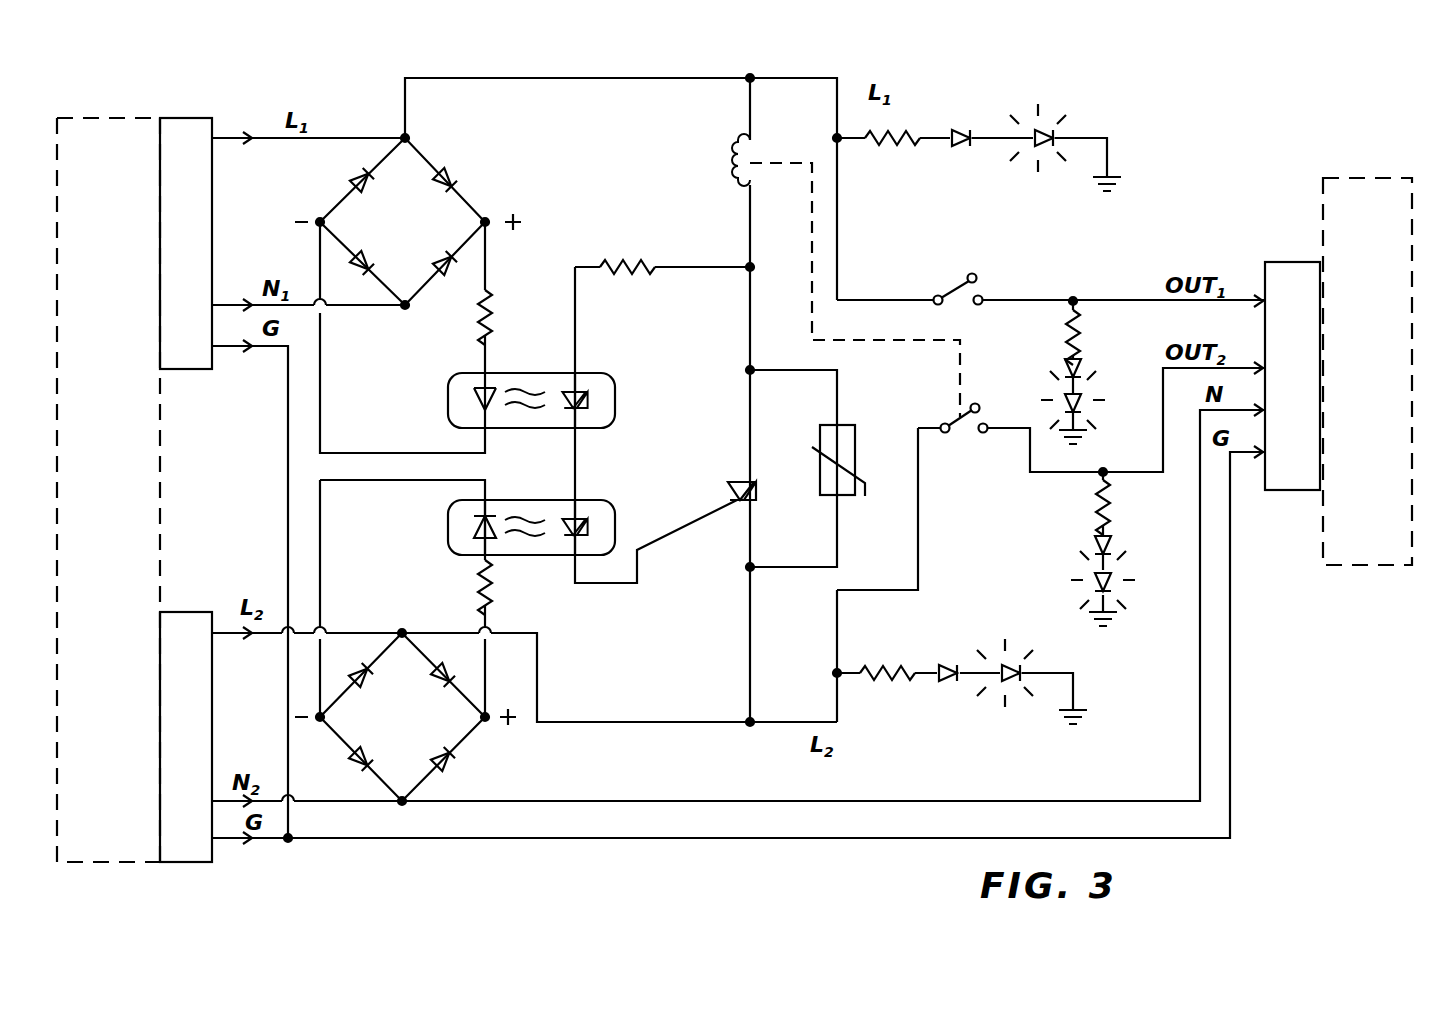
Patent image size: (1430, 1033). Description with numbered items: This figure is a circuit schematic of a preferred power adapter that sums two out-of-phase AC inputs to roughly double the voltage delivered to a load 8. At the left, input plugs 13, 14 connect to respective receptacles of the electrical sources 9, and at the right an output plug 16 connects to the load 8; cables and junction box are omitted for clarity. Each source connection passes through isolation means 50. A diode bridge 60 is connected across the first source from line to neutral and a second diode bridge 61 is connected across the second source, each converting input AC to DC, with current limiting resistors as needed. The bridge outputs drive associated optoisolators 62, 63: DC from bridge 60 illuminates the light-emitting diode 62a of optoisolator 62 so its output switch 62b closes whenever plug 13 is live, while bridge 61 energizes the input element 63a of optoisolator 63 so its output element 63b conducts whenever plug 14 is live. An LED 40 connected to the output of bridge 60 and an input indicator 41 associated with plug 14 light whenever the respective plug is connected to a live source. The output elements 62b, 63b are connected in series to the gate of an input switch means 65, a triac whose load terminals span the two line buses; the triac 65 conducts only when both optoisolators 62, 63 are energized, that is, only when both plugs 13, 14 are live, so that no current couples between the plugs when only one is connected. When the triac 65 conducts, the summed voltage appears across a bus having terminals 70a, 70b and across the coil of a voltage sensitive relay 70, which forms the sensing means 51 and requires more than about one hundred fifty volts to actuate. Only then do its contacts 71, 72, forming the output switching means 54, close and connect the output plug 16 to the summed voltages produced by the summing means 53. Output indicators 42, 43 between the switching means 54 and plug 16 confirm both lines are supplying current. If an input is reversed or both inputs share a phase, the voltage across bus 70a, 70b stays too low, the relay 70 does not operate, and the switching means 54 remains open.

The load 8 is at (1330, 178).
The electrical sources 9 is at (115, 118).
The input plug 13 is at (212, 369).
The input plug 14 is at (212, 862).
The output plug 16 is at (1290, 262).
The LED 40 is at (1058, 128).
The input indicator 41 is at (1003, 690).
The output indicator 42 is at (1082, 415).
The output indicator 43 is at (1112, 595).
The isolation means 50 is at (571, 231).
The sensing means 51 is at (839, 42).
The summing means 53 is at (779, 337).
The output switching means 54 is at (1051, 278).
The diode bridge 60 is at (418, 236).
The diode bridge 61 is at (418, 731).
The optoisolator 62 is at (549, 372).
The light-emitting diode 62a is at (475, 395).
The output switch 62b is at (590, 400).
The optoisolator 63 is at (534, 507).
The input element 63a is at (475, 527).
The output element 63b is at (590, 520).
The input switch means 65 is at (728, 478).
The voltage sensitive relay 70 is at (738, 163).
The bus terminal 70a is at (683, 72).
The bus terminal 70b is at (612, 742).
The relay contact 71 is at (936, 306).
The relay contact 72 is at (949, 433).